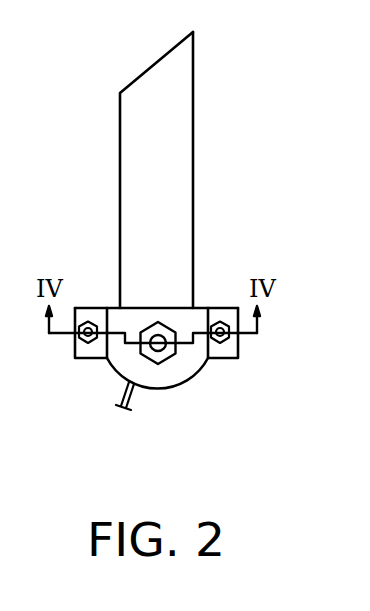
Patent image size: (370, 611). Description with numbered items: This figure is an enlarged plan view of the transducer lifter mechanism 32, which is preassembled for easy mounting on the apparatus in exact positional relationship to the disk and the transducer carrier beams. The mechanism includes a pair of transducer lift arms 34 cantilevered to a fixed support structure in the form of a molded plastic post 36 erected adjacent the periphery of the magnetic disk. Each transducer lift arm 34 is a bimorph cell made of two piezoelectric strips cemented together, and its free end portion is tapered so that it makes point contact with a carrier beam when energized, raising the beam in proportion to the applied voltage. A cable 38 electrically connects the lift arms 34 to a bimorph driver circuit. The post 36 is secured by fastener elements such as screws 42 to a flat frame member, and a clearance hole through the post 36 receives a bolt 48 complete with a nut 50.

The transducer lifter mechanism 32 is at (102, 88).
The transducer lift arms 34 is at (187, 85).
The post 36 is at (200, 370).
The cable 38 is at (115, 402).
The screws 42 is at (82, 340).
The bolt 48 is at (166, 358).
The nut 50 is at (156, 352).